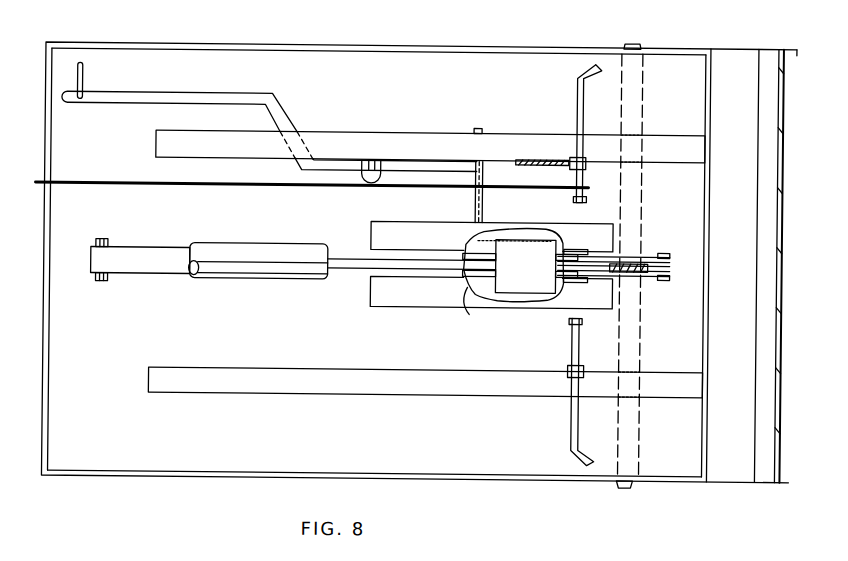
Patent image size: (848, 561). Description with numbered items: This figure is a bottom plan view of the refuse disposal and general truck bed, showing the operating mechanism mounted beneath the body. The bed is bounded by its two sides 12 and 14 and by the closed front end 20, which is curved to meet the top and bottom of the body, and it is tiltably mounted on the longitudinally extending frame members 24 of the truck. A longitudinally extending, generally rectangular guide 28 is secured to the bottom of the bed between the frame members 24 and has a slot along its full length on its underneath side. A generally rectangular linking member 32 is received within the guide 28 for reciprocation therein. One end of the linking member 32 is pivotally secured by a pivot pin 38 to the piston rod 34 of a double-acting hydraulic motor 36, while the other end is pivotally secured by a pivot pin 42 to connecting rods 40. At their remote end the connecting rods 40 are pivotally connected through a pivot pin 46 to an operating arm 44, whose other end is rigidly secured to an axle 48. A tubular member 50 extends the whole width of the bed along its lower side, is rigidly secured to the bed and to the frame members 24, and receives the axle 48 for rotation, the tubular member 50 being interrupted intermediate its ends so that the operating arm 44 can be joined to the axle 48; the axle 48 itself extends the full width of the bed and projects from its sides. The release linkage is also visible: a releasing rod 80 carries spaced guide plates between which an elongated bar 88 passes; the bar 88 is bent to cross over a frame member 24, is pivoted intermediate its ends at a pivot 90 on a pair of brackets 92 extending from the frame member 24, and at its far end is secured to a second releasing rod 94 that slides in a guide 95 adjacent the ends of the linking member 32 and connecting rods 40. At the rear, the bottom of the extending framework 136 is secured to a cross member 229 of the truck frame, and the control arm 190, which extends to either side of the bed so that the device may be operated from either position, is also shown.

The side 12 is at (283, 42).
The side 14 is at (312, 473).
The closed front end 20 is at (54, 393).
The frame members 24 is at (430, 140).
The guide 28 is at (374, 229).
The linking member 32 is at (513, 269).
The piston rod 34 is at (348, 264).
The double-acting hydraulic motor 36 is at (289, 277).
The pivot pin 38 is at (482, 302).
The connecting rods 40 is at (580, 244).
The pivot pin 42 is at (577, 245).
The operating arm 44 is at (664, 249).
The pivot pin 46 is at (669, 269).
The axle 48 is at (640, 40).
The tubular member 50 is at (644, 84).
The releasing rod 80 is at (85, 76).
The elongated bar 88 is at (188, 92).
The pivot 90 is at (364, 157).
The brackets 92 is at (378, 157).
The second releasing rod 94 is at (487, 200).
The guide 95 is at (488, 158).
The extending framework 136 is at (740, 50).
The control arm 190 is at (586, 64).
The cross member 229 is at (714, 441).